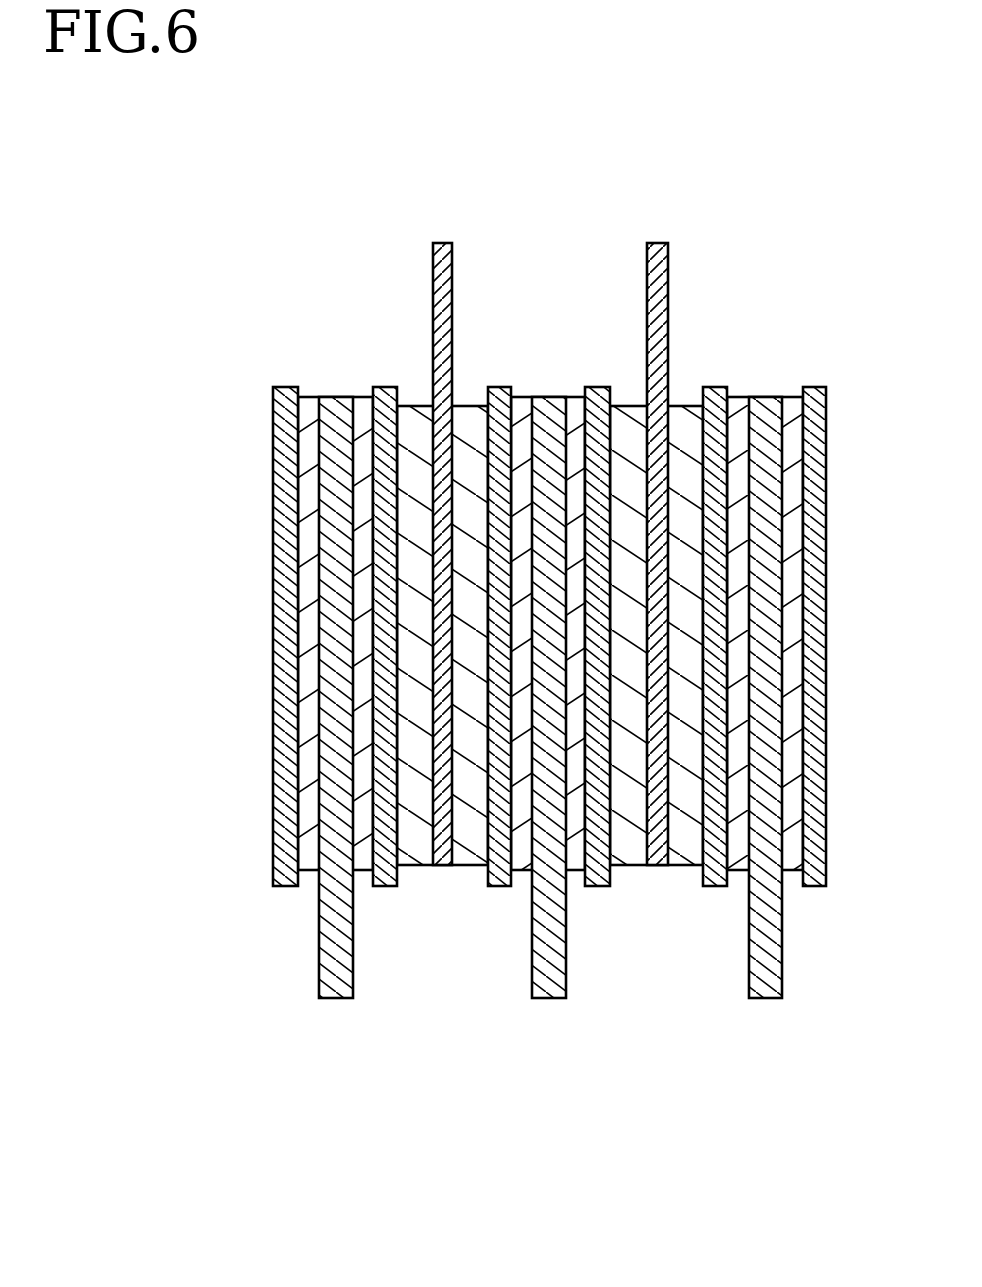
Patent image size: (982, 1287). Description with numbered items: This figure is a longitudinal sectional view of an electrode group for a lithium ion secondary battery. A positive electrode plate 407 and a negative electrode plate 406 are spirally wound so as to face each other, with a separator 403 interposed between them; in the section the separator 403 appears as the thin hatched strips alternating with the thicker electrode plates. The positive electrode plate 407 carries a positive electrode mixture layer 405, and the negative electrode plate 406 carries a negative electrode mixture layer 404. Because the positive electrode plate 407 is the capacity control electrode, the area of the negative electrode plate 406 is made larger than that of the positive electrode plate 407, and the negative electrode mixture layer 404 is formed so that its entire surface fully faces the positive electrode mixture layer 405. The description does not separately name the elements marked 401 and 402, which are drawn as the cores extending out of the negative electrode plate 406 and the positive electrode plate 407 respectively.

The negative electrode current collector 401 is at (550, 740).
The positive electrode current collector 402 is at (593, 149).
The separator 403 is at (810, 387).
The negative electrode mixture layer 404 is at (793, 870).
The positive electrode mixture layer 405 is at (468, 412).
The negative electrode plate 406 is at (595, 772).
The positive electrode plate 407 is at (550, 474).